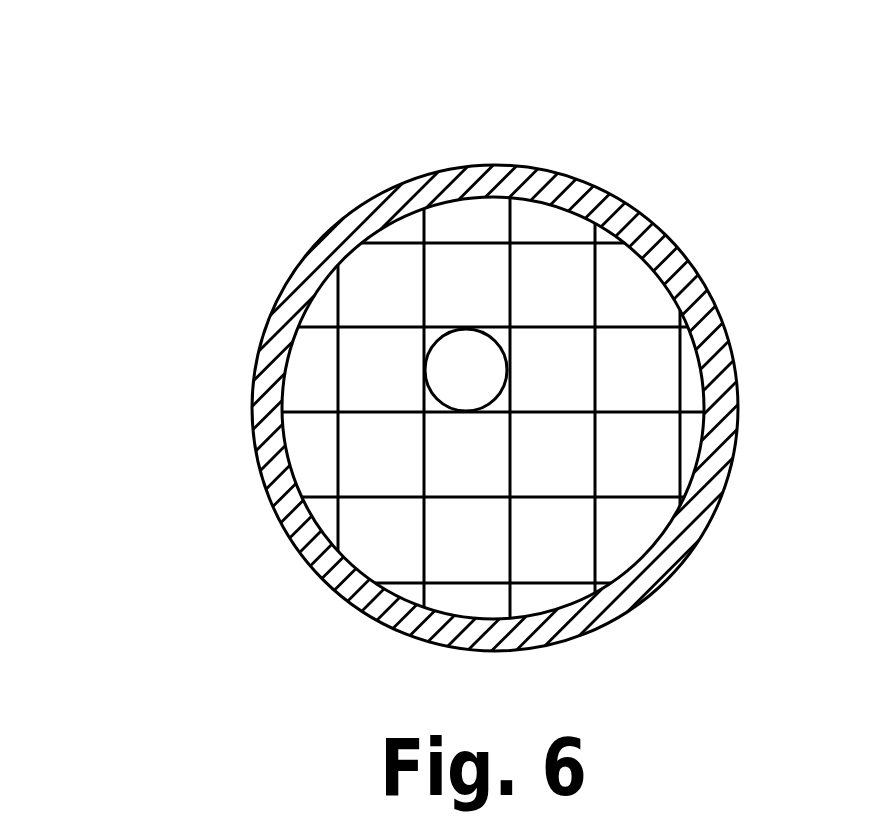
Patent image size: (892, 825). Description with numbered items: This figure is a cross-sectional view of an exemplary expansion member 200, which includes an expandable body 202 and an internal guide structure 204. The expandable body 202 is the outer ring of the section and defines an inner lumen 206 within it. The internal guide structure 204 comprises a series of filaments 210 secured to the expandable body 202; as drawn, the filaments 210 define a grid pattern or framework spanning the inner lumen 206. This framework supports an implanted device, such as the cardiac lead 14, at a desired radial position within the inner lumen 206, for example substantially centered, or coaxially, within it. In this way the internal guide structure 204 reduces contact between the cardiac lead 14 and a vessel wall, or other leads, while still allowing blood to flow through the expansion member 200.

The expansion member 200 is at (335, 190).
The expandable body 202 is at (383, 187).
The internal guide structure 204 is at (327, 377).
The inner lumen 206 is at (630, 302).
The filaments 210 is at (335, 470).
The cardiac lead 14 is at (425, 336).